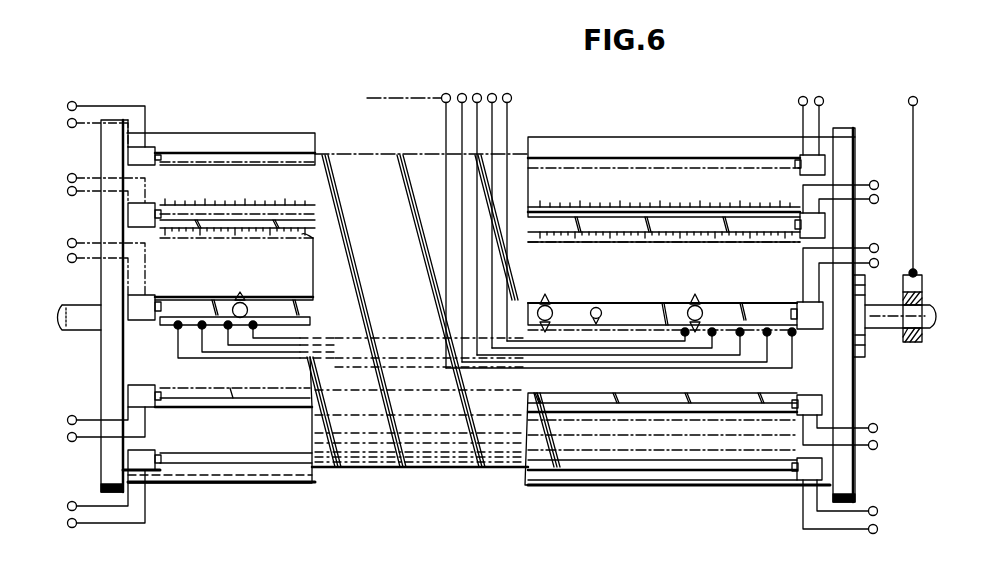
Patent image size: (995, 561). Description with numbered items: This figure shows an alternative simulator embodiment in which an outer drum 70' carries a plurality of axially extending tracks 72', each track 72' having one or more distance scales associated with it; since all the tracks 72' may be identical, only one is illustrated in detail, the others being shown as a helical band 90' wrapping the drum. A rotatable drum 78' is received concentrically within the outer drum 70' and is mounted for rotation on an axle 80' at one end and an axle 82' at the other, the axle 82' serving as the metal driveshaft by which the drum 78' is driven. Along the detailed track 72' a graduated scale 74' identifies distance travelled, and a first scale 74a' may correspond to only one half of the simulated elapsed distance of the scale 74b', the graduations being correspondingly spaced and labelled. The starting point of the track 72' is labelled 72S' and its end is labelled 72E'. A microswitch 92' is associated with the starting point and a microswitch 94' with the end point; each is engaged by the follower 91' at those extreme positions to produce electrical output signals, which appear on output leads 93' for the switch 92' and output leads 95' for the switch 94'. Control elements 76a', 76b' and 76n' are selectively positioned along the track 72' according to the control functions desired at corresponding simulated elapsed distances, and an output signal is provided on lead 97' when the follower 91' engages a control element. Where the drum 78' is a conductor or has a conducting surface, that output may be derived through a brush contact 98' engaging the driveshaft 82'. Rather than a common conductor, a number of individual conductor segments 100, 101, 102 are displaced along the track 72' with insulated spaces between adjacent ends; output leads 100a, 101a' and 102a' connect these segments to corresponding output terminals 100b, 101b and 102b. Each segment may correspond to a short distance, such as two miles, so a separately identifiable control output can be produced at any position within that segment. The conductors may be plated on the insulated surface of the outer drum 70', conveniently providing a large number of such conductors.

The outer drum 70' is at (221, 128).
The scale 74' is at (221, 204).
The output leads 95' is at (103, 250).
The end of the track 72E' is at (234, 274).
The control element 76n' is at (259, 288).
The track 72' is at (480, 314).
The helical band 90' is at (433, 310).
The rotatable drum 78' is at (420, 368).
The microswitch 94' is at (219, 325).
The axle 80' is at (80, 336).
The output terminal 100b is at (446, 93).
The output terminal 101b is at (477, 93).
The terminal 102b is at (492, 93).
The scale 74b' is at (664, 193).
The first scale 74a' is at (676, 242).
The control element 76b' is at (547, 293).
The follower 91' is at (594, 298).
The control element 76a' is at (679, 302).
The conductor segment 102 is at (728, 326).
The conductor segment 101 is at (752, 326).
The conductor segment 100 is at (778, 326).
The output lead 100a is at (797, 352).
The output lead 102a' is at (608, 362).
The output lead 101a' is at (638, 362).
The microswitch 92' is at (845, 302).
The starting point of the track 72S' is at (862, 315).
The axle 82' is at (894, 318).
The brush contact 98' is at (912, 327).
The output lead 97' is at (899, 172).
The output leads 93' is at (855, 206).